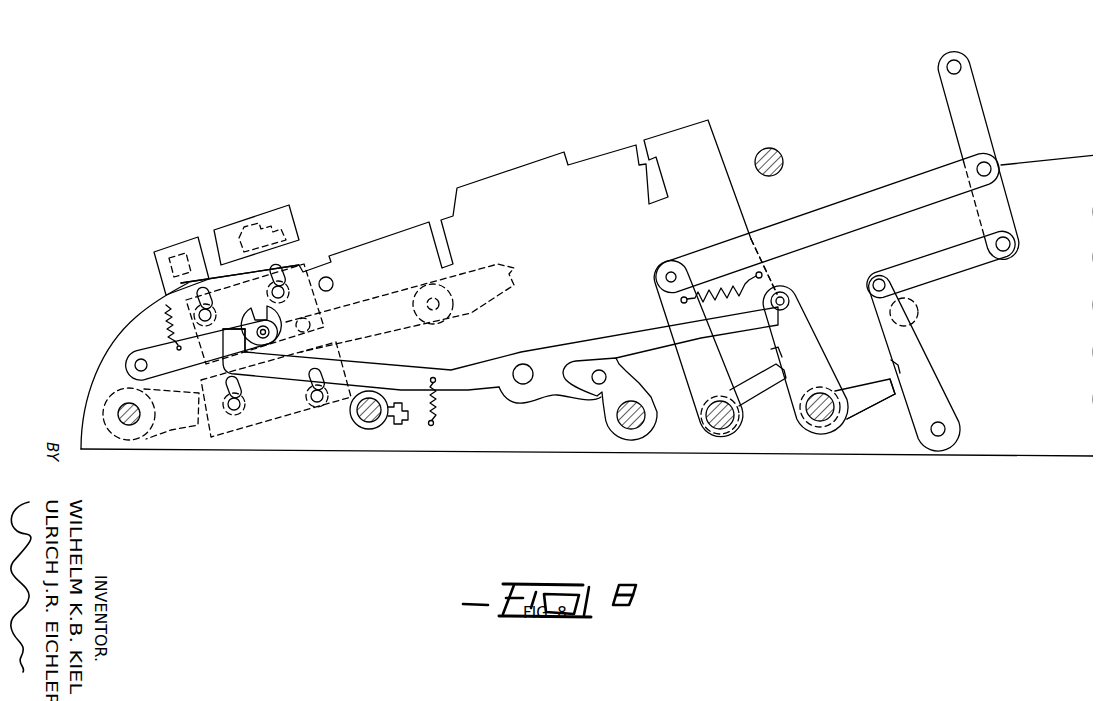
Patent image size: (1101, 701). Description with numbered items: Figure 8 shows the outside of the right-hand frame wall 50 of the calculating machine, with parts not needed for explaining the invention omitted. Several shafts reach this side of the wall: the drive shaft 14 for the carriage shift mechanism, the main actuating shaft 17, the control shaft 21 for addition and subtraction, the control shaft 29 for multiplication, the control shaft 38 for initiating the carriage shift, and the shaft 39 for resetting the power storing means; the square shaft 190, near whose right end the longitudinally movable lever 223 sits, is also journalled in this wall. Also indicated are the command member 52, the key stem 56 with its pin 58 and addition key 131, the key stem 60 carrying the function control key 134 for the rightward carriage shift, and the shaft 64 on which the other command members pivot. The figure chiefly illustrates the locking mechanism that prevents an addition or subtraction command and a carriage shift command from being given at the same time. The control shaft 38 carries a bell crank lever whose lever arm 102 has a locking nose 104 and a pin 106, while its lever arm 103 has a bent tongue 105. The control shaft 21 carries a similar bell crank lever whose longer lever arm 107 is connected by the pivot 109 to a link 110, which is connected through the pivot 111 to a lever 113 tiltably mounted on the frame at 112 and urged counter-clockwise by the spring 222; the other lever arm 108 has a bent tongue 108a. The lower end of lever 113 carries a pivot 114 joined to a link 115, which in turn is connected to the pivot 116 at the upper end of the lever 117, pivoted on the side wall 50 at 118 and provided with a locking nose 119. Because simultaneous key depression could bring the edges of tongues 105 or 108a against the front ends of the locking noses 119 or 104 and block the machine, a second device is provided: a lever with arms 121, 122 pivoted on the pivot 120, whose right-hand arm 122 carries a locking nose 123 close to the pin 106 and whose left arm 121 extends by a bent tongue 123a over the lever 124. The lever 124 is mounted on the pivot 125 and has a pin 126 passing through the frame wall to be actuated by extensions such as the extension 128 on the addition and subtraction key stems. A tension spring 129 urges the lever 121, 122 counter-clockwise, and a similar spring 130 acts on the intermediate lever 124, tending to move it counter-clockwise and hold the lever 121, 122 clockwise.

The drive shaft 14 is at (913, 313).
The main actuating shaft 17 is at (780, 158).
The control shaft for addition and subtraction 21 is at (724, 425).
The control shaft for multiplication 29 is at (368, 418).
The control shaft for initiating the carriage shift 38 is at (824, 416).
The resetting shaft 39 is at (632, 422).
The right frame wall 50 is at (580, 428).
The command member 52 is at (473, 320).
The key stem 56 is at (283, 258).
The pin 58 is at (304, 322).
The key stem 60 is at (185, 310).
The shaft 64 is at (428, 283).
The lever arm 102 is at (808, 337).
The lever arm 103 is at (870, 395).
The locking nose 104 is at (775, 352).
The bent tongue 105 is at (888, 385).
The pin 106 is at (789, 266).
The lever arm 107 is at (697, 372).
The lever arm 108 is at (760, 390).
The bent tongue 108a is at (783, 380).
The pivot 109 is at (665, 275).
The link 110 is at (835, 207).
The pivot 111 is at (989, 166).
The pivot 112 is at (962, 65).
The lever 113 is at (967, 110).
The pivot 114 is at (1010, 237).
The link 115 is at (962, 258).
The pivot 116 is at (880, 277).
The lever 117 is at (938, 402).
The pivot 118 is at (940, 432).
The locking nose 119 is at (893, 362).
The pivot 120 is at (522, 382).
The lever arm 121 is at (482, 375).
The lever arm 122 is at (583, 350).
The locking nose 123 is at (767, 312).
The bent tongue 123a is at (213, 307).
The intermediate lever 124 is at (133, 355).
The pivot 125 is at (134, 364).
The pin 126 is at (263, 336).
The extension 128 is at (248, 303).
The tension spring 129 is at (430, 426).
The spring 130 is at (165, 332).
The addition key 131 is at (287, 227).
The function control key 134 is at (190, 247).
The square shaft 190 is at (128, 423).
The spring 222 is at (707, 283).
The lever 223 is at (177, 433).